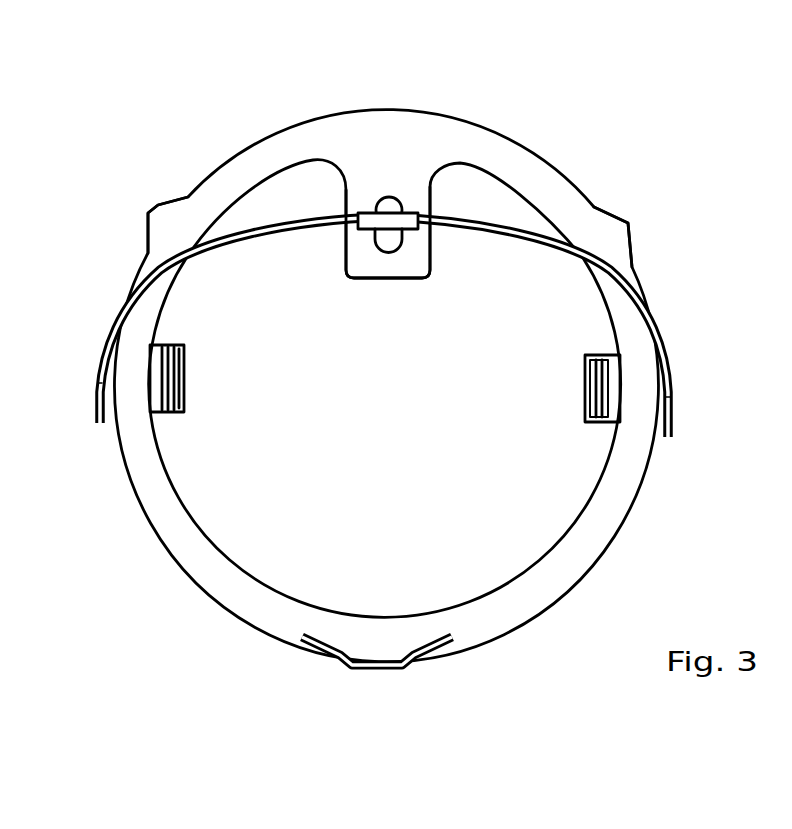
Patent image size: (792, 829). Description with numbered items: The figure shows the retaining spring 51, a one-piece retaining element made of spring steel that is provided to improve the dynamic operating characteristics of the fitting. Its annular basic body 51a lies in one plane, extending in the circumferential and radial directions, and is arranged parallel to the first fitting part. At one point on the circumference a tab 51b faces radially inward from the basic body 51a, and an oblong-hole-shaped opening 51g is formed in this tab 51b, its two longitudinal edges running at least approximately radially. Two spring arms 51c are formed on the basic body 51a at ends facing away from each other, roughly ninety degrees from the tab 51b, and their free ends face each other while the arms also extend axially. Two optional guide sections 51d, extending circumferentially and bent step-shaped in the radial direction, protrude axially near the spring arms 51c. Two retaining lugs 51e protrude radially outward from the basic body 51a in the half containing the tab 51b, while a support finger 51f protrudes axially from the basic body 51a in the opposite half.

The retaining spring 51 is at (407, 360).
The annular basic body 51a is at (551, 573).
The tab 51b is at (377, 263).
The spring arms 51c is at (255, 247).
The guide sections 51d is at (171, 397).
The retaining lugs 51e is at (158, 220).
The support finger 51f is at (368, 660).
The oblong-hole-shaped opening 51g is at (388, 207).